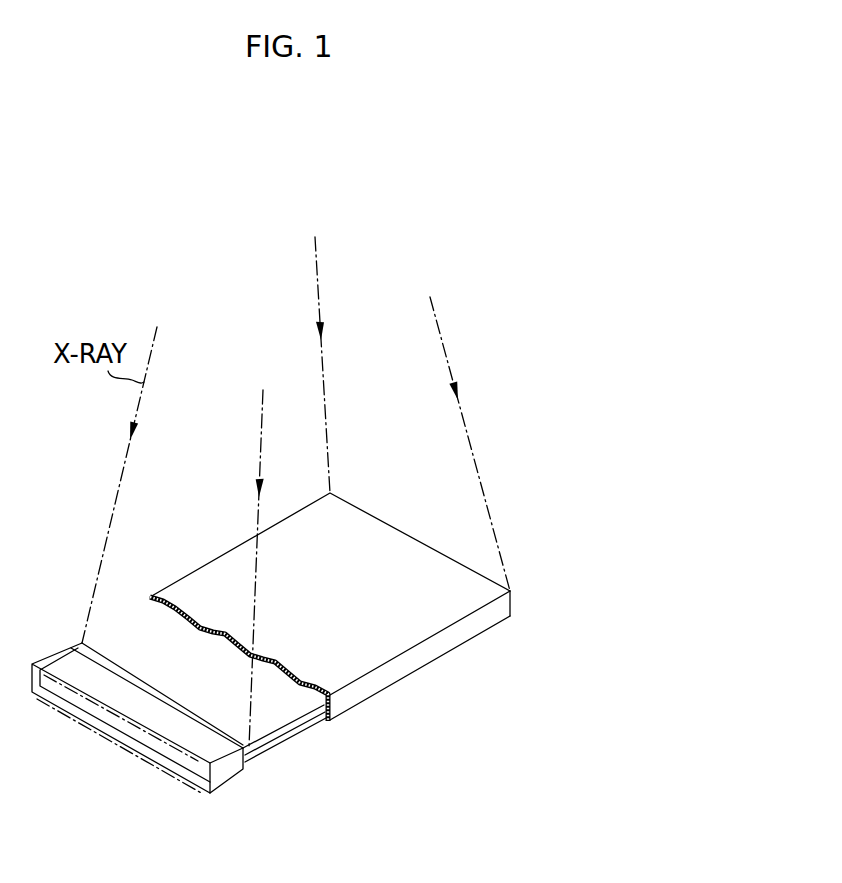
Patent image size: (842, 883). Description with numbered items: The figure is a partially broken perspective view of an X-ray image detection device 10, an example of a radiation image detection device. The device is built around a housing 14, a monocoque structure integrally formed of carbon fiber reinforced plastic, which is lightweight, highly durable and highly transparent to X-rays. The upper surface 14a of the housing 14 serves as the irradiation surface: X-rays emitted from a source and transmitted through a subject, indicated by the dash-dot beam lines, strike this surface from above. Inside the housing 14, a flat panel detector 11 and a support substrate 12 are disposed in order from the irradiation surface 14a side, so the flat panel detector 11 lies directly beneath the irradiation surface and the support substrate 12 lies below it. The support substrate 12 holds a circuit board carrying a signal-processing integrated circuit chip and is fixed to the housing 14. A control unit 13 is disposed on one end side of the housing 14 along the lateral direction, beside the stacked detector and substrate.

The X-ray image detection device 10 is at (125, 797).
The flat panel detector 11 is at (295, 720).
The support substrate 12 is at (273, 750).
The control unit 13 is at (131, 724).
The housing 14 is at (430, 660).
The upper surface 14a is at (236, 562).